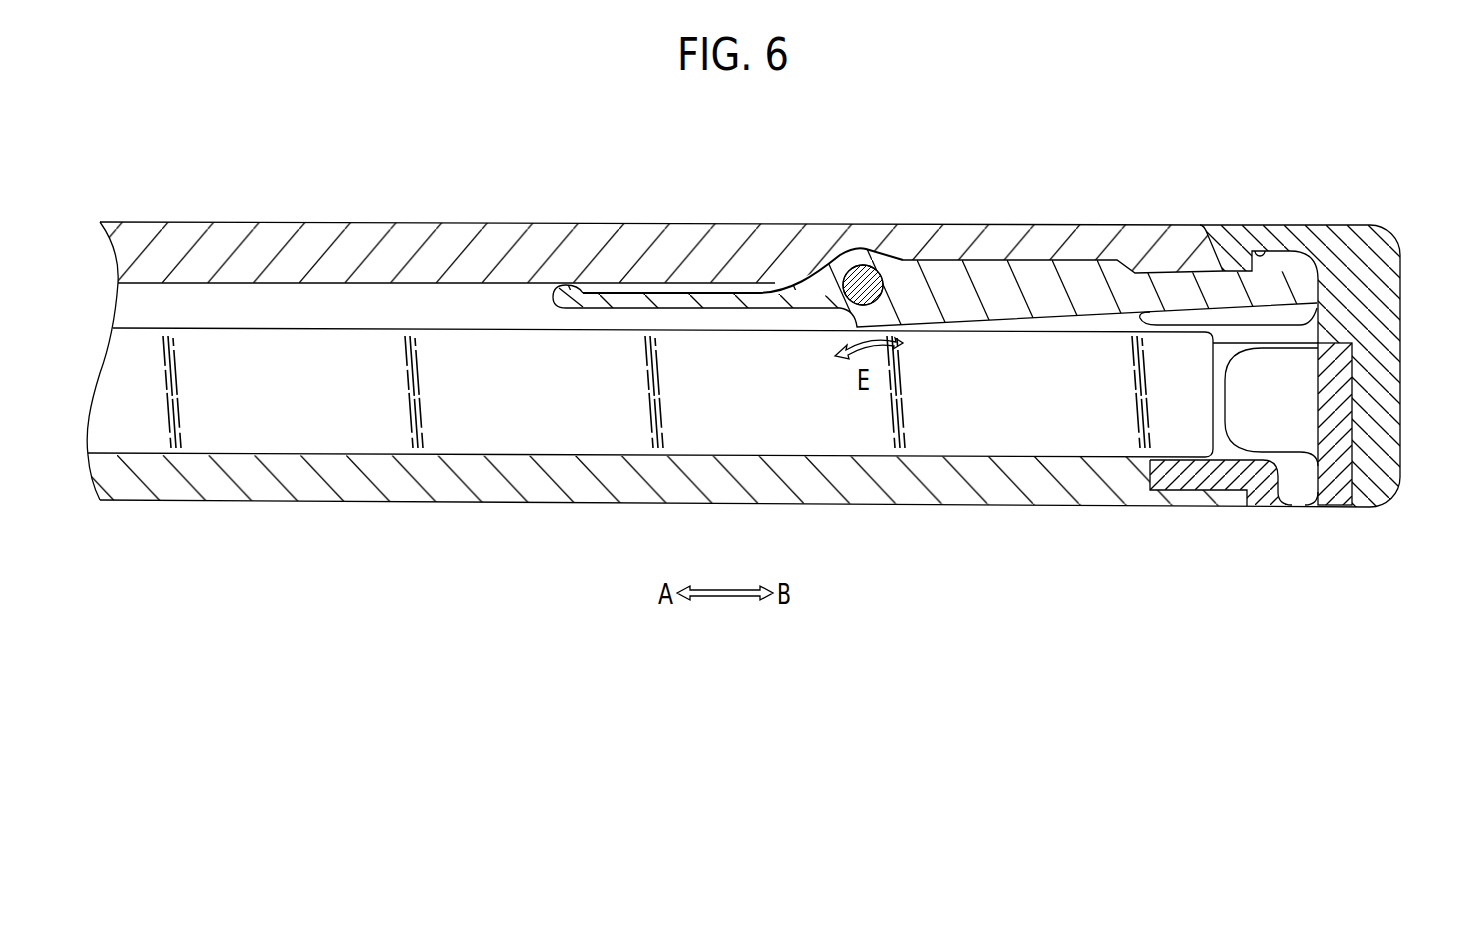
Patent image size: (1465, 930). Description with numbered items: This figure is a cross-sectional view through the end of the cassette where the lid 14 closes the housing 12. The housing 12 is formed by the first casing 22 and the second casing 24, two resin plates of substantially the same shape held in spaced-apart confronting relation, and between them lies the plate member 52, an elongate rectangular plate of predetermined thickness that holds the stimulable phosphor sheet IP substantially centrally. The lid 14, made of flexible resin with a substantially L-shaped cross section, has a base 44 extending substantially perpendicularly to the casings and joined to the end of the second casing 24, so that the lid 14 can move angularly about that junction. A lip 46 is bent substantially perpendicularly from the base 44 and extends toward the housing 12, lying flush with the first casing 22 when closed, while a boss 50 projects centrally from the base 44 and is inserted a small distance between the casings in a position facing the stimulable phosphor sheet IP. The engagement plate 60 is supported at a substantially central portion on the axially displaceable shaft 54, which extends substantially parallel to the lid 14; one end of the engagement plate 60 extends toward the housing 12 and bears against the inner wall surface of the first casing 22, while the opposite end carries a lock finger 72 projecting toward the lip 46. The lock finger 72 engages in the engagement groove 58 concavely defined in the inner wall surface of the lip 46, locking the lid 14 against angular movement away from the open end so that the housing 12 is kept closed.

The housing 12 is at (329, 220).
The first casing 22 is at (541, 238).
The second casing 24 is at (545, 490).
The plate member 52 is at (498, 373).
The stimulable phosphor sheet IP is at (301, 430).
The engagement plate 60 is at (989, 317).
The shaft 54 is at (864, 268).
The lid 14 is at (1404, 323).
The base 44 is at (1372, 440).
The lip 46 is at (1282, 250).
The lock finger 72 is at (1284, 268).
The engagement groove 58 is at (1248, 249).
The boss 50 is at (1263, 432).